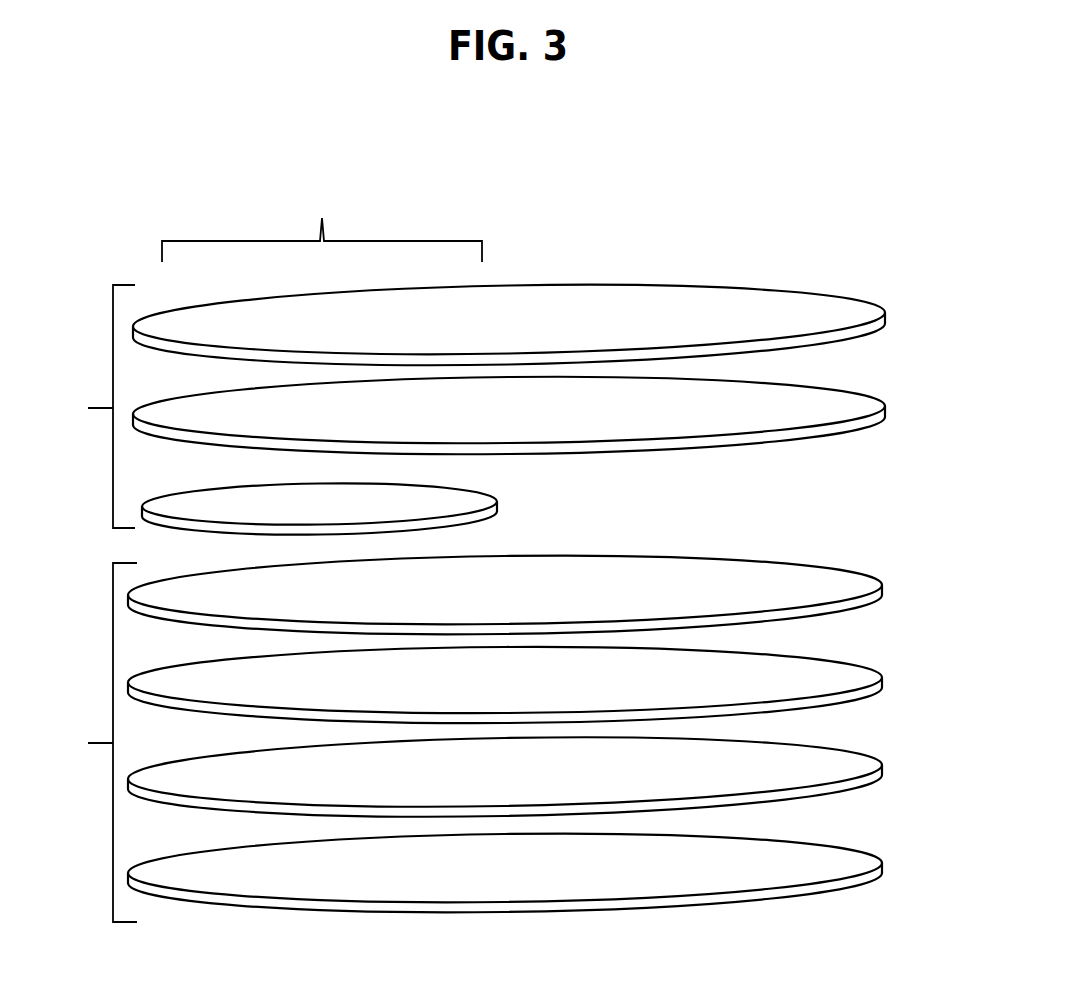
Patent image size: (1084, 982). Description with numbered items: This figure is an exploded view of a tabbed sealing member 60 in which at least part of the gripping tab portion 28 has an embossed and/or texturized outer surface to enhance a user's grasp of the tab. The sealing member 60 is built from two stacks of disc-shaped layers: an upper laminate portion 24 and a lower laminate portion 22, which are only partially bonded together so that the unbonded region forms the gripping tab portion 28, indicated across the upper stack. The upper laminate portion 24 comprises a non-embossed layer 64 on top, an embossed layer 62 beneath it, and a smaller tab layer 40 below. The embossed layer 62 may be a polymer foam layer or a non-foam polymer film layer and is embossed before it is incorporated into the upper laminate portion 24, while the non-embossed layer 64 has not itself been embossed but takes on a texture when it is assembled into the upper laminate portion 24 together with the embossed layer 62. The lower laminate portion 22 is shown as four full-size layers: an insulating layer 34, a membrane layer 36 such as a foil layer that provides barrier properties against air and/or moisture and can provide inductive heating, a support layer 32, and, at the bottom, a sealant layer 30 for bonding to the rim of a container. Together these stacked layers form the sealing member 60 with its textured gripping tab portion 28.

The sealing member 60 is at (784, 230).
The gripping tab portion 28 is at (322, 213).
The upper laminate portion 24 is at (502, 407).
The lower laminate portion 22 is at (502, 736).
The non-embossed layer 64 is at (818, 319).
The embossed layer 62 is at (822, 413).
The tab layer 40 is at (443, 503).
The insulating layer 34 is at (818, 589).
The membrane layer 36 is at (820, 683).
The support layer 32 is at (820, 772).
The sealant layer 30 is at (820, 867).